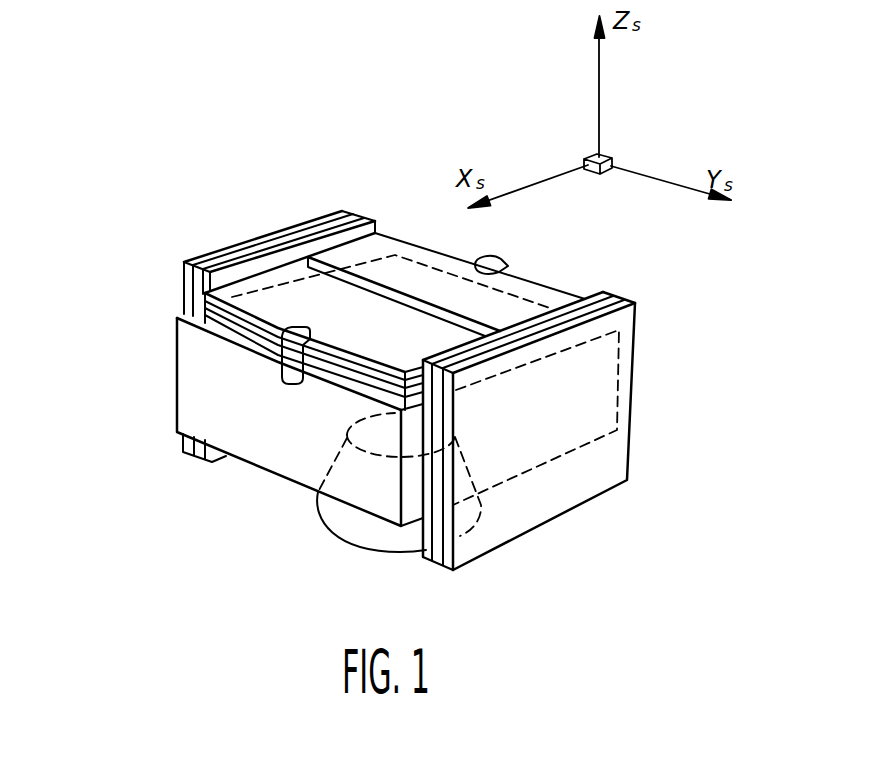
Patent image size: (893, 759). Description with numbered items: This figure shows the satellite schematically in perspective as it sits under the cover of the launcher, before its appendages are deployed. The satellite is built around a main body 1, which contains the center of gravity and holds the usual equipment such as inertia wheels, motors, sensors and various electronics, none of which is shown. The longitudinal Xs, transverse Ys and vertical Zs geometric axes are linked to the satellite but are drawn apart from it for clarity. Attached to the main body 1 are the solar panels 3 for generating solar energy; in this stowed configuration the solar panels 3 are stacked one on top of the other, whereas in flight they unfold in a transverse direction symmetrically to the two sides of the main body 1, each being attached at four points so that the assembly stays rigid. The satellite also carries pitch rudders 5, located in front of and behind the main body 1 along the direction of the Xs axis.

The main body 1 is at (143, 378).
The solar panels 3 is at (212, 262).
The pitch rudders 5 is at (280, 273).